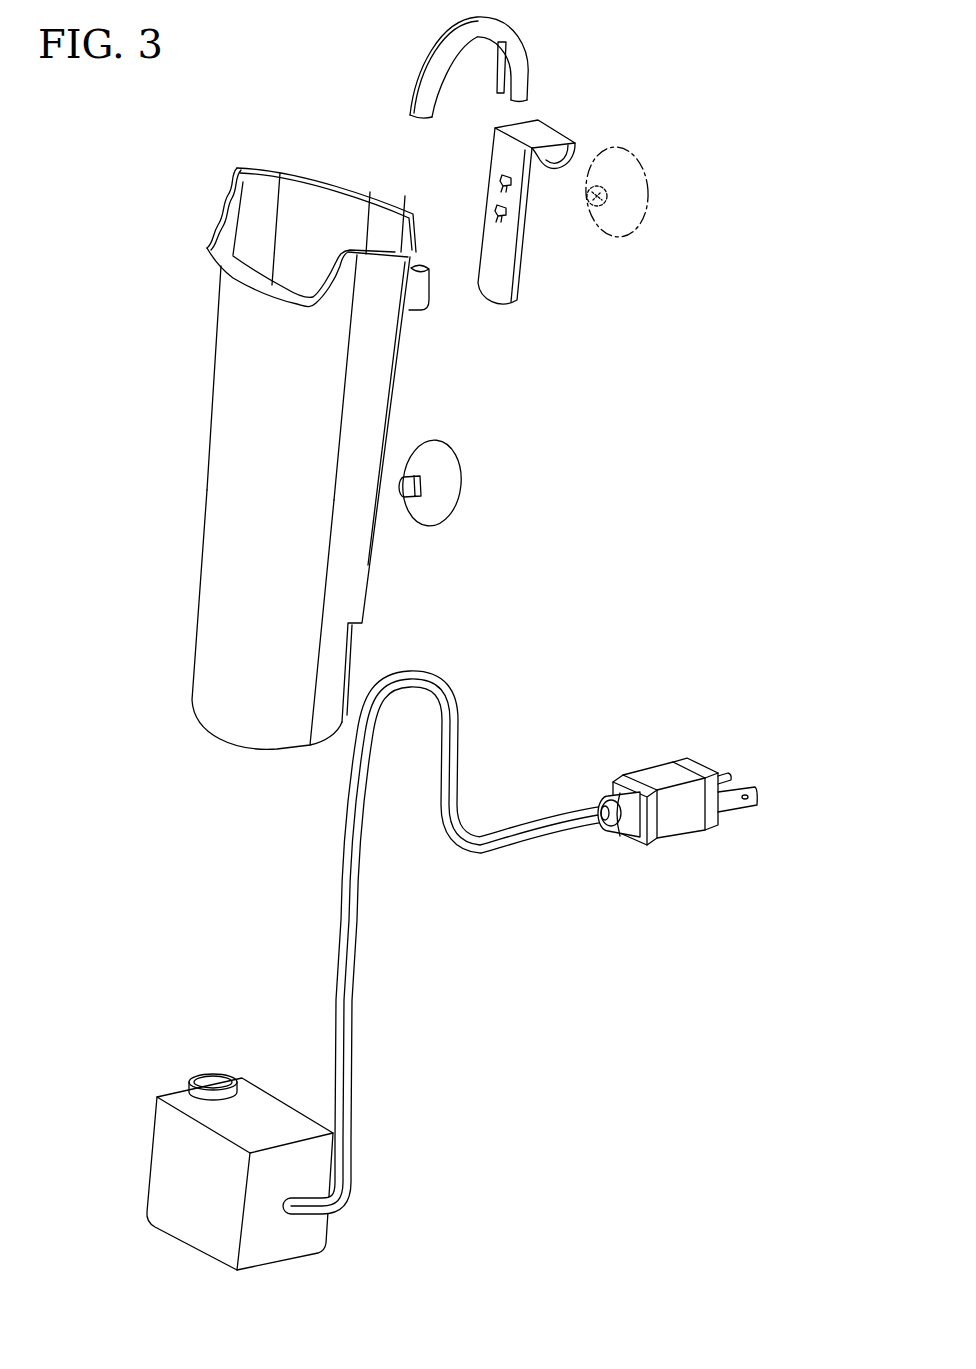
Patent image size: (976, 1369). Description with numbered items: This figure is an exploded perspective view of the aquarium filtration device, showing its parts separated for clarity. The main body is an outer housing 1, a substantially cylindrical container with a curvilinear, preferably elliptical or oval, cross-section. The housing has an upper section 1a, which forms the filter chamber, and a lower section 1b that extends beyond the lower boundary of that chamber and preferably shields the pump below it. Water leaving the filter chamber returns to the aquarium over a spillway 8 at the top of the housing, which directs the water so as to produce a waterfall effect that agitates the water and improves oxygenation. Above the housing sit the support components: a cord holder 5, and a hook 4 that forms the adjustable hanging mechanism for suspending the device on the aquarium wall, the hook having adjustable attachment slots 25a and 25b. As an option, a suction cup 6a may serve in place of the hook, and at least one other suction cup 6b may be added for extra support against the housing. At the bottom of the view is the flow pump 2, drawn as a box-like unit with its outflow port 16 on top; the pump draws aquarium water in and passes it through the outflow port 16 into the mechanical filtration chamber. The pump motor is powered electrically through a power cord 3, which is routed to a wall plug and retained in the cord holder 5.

The outer housing 1 is at (208, 490).
The upper section 1a is at (248, 360).
The lower section 1b is at (233, 705).
The flow pump 2 is at (205, 1210).
The power cord 3 is at (540, 835).
The hook 4 is at (537, 133).
The cord holder 5 is at (428, 67).
The suction cup 6a is at (646, 189).
The suction cup 6b is at (443, 492).
The spillway 8 is at (207, 247).
The outflow port 16 is at (212, 1078).
The adjustable attachment slot 25a is at (510, 185).
The adjustable attachment slot 25b is at (503, 214).